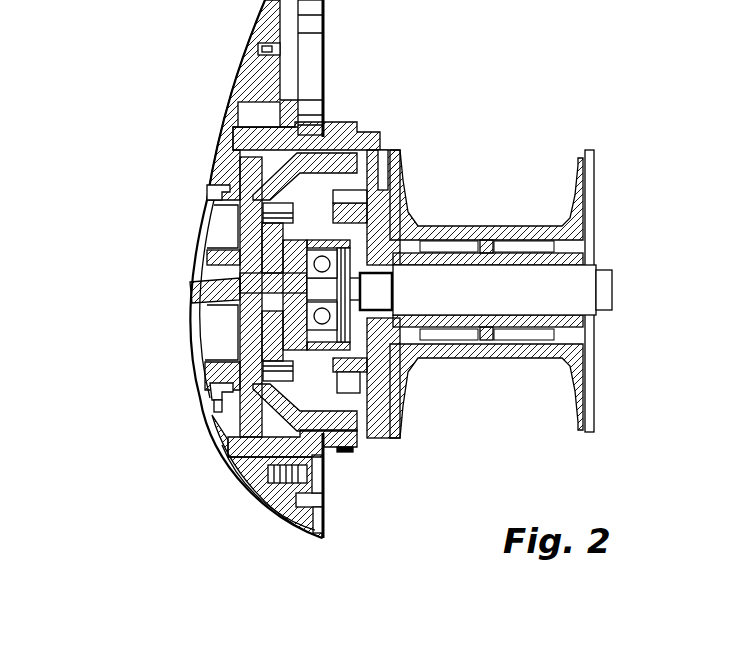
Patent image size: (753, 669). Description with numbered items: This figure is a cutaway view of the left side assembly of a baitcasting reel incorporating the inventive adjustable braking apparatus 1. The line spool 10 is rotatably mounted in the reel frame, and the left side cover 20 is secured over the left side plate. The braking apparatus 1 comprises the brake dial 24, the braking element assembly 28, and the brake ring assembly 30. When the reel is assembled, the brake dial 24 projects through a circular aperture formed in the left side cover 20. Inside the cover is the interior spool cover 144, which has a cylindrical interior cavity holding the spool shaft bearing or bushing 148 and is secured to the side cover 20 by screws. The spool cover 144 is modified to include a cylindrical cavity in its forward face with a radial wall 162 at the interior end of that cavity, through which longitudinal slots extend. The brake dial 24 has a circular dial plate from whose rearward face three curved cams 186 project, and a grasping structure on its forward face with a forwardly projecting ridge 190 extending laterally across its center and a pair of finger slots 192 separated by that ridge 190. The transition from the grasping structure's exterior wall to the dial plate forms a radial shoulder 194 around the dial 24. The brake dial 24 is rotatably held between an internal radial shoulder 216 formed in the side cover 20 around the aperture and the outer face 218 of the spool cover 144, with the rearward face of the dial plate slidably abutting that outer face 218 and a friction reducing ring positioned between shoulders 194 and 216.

The adjustable braking apparatus 1 is at (378, 124).
The line spool 10 is at (487, 225).
The left side cover 20 is at (240, 80).
The brake dial 24 is at (208, 372).
The braking element assembly 28 is at (345, 452).
The brake ring assembly 30 is at (237, 440).
The interior spool cover 144 is at (245, 150).
The spool shaft bearing or bushing 148 is at (327, 318).
The radial wall 162 is at (260, 230).
The curved cams 186 is at (263, 350).
The forwardly projecting ridge 190 is at (205, 296).
The finger slots 192 is at (215, 262).
The radial shoulder 194 is at (228, 400).
The internal radial shoulder 216 is at (218, 406).
The outer face of spool cover 218 is at (235, 192).